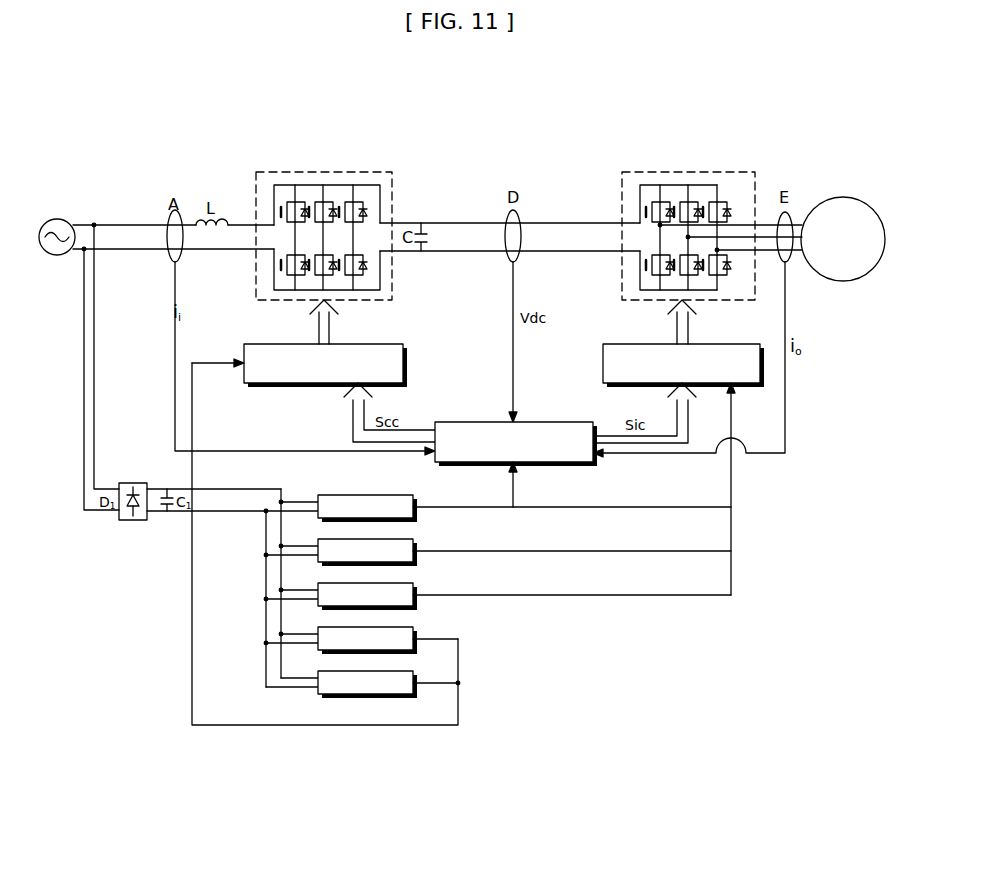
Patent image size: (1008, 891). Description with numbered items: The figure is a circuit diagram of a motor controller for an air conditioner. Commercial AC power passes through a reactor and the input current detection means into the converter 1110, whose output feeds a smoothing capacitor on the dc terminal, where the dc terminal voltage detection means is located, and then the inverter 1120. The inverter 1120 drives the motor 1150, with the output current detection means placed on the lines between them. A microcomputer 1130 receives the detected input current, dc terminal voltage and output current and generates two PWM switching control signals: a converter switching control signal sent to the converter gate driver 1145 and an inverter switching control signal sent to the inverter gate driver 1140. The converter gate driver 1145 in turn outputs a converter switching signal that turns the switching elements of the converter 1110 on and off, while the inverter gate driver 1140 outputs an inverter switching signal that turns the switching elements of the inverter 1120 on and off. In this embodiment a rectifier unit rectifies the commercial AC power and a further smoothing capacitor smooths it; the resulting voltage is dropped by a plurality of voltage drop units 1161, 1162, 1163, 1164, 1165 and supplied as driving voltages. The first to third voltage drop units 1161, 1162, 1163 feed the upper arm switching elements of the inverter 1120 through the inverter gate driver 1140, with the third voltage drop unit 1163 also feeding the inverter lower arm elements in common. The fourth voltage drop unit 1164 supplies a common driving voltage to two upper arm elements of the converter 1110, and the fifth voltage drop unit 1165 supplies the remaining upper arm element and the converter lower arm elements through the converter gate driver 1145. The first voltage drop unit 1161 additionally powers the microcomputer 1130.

The converter 1110 is at (356, 172).
The inverter 1120 is at (710, 172).
The microcomputer 1130 is at (573, 422).
The inverter gate driver 1140 is at (737, 344).
The converter gate driver 1145 is at (381, 344).
The motor 1150 is at (845, 197).
The first voltage drop unit 1161 is at (318, 517).
The second voltage drop unit 1162 is at (318, 561).
The third voltage drop unit 1163 is at (318, 605).
The fourth voltage drop unit 1164 is at (318, 649).
The fifth voltage drop unit 1165 is at (318, 693).